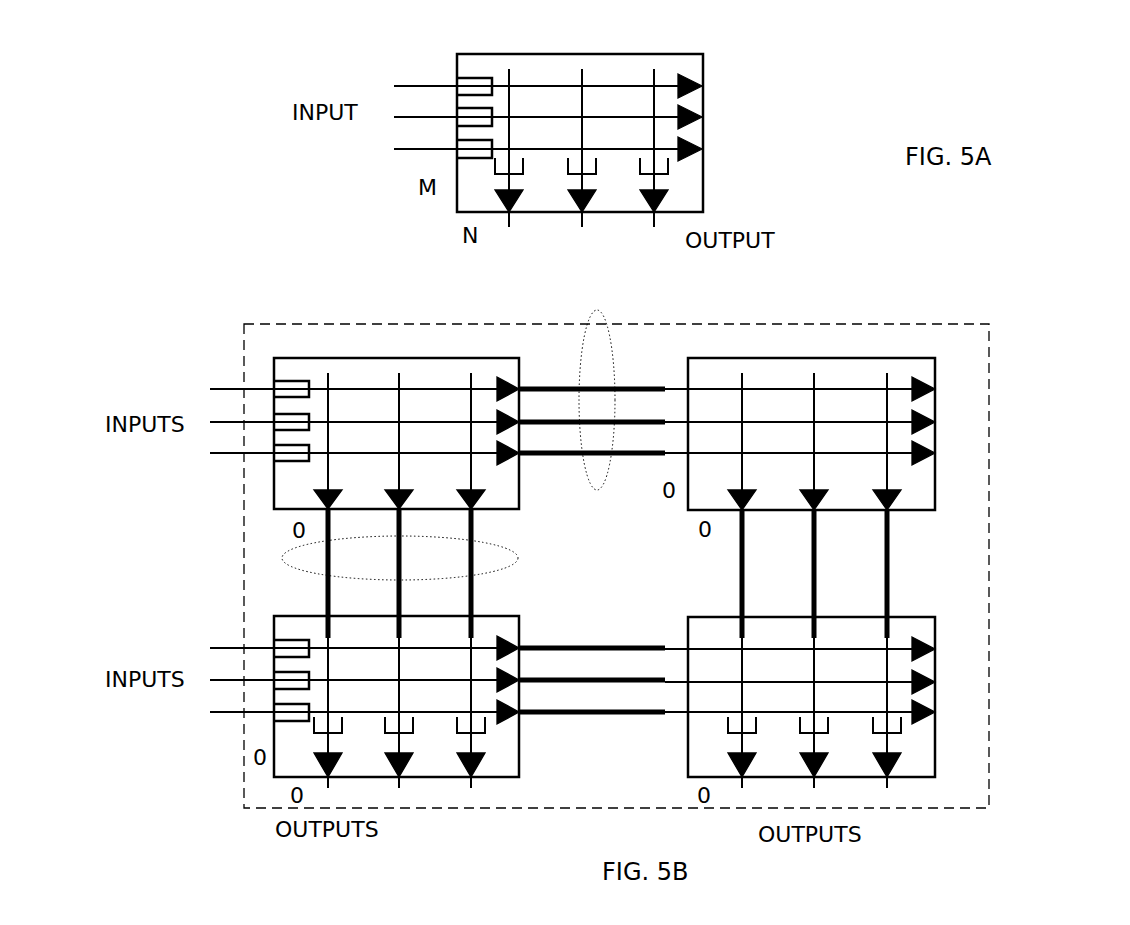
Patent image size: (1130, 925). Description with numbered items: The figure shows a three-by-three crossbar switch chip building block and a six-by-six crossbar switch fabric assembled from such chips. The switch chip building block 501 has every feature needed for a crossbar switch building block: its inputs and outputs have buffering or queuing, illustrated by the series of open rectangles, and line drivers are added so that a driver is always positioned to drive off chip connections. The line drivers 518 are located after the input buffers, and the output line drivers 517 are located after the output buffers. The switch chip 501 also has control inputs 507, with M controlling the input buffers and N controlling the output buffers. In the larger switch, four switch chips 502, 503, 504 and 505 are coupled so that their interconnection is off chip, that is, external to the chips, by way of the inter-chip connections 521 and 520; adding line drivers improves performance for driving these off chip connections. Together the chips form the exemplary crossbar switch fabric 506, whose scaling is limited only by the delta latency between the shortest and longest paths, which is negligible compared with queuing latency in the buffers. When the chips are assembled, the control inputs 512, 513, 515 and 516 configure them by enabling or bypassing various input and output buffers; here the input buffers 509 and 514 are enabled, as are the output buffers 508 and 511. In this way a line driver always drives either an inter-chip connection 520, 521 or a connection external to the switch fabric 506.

In FIG. 5A, the switch chip building block 501 is at (708, 136).
In FIG. 5B, the switch chip 502 is at (437, 391).
In FIG. 5B, the switch chip 503 is at (888, 358).
In FIG. 5B, the switch chip 504 is at (414, 730).
In FIG. 5B, the switch chip 505 is at (860, 698).
In FIG. 5B, the crossbar switch fabric 506 is at (990, 445).
In FIG. 5A, the control inputs 507 is at (433, 220).
In FIG. 5B, the output buffers 508 is at (408, 770).
In FIG. 5B, the input buffers 509 is at (287, 378).
In FIG. 5B, the output buffers 511 is at (920, 758).
In FIG. 5B, the control input 512 is at (254, 508).
In FIG. 5B, the control input 513 is at (672, 510).
In FIG. 5B, the input buffers 514 is at (303, 636).
In FIG. 5B, the control input 515 is at (676, 779).
In FIG. 5B, the control input 516 is at (262, 782).
In FIG. 5A, the output line drivers 517 is at (678, 208).
In FIG. 5A, the line drivers 518 is at (695, 80).
In FIG. 5B, the inter-chip connection 520 is at (518, 560).
In FIG. 5B, the inter-chip connection 521 is at (608, 360).